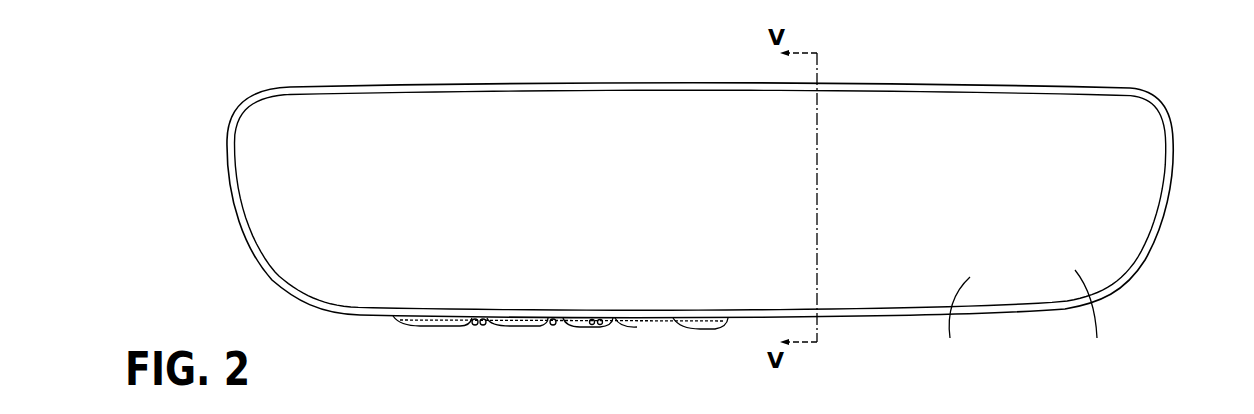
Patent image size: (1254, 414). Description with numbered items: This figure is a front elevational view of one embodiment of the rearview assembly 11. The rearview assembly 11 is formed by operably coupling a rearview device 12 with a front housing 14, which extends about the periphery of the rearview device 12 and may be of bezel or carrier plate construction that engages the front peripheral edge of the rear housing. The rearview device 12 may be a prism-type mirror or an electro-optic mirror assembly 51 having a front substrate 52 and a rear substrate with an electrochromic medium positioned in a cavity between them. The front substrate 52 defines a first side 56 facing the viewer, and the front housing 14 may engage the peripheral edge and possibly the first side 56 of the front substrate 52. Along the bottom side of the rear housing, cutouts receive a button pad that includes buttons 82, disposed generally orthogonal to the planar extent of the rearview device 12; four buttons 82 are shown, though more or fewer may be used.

The rearview assembly 11 is at (739, 199).
The rearview device 12 is at (1135, 198).
The front housing 14 is at (1153, 243).
The first side 56 is at (522, 225).
The front substrate 52 is at (953, 324).
The electro-optic mirror assembly 51 is at (1094, 317).
The buttons 82 is at (500, 327).